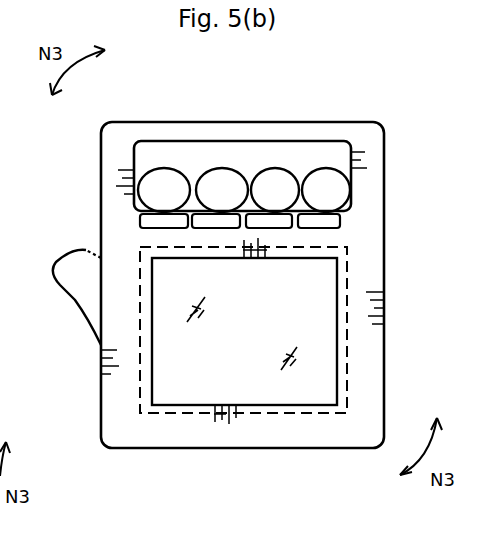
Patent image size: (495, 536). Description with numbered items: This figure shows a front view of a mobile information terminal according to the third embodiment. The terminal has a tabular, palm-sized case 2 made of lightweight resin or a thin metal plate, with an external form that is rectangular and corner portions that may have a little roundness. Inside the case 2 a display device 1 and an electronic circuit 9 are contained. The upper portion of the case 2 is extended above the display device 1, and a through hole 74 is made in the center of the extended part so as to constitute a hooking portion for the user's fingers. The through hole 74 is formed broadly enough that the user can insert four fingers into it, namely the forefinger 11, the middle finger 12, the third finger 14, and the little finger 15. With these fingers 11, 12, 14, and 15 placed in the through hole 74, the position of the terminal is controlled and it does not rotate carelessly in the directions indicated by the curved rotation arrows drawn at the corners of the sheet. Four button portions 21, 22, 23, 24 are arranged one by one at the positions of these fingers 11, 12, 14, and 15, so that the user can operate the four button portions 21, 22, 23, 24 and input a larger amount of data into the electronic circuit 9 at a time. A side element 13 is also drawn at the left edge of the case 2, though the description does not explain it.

The display device 1 is at (185, 388).
The case 2 is at (293, 433).
The electronic circuit 9 is at (258, 418).
The forefinger 11 is at (158, 180).
The middle finger 12 is at (213, 178).
The side tab 13 is at (88, 290).
The third finger 14 is at (273, 183).
The little finger 15 is at (325, 192).
The button portion 21 is at (150, 221).
The button portion 22 is at (217, 218).
The button portion 23 is at (268, 224).
The button portion 24 is at (330, 226).
The through hole 74 is at (310, 158).